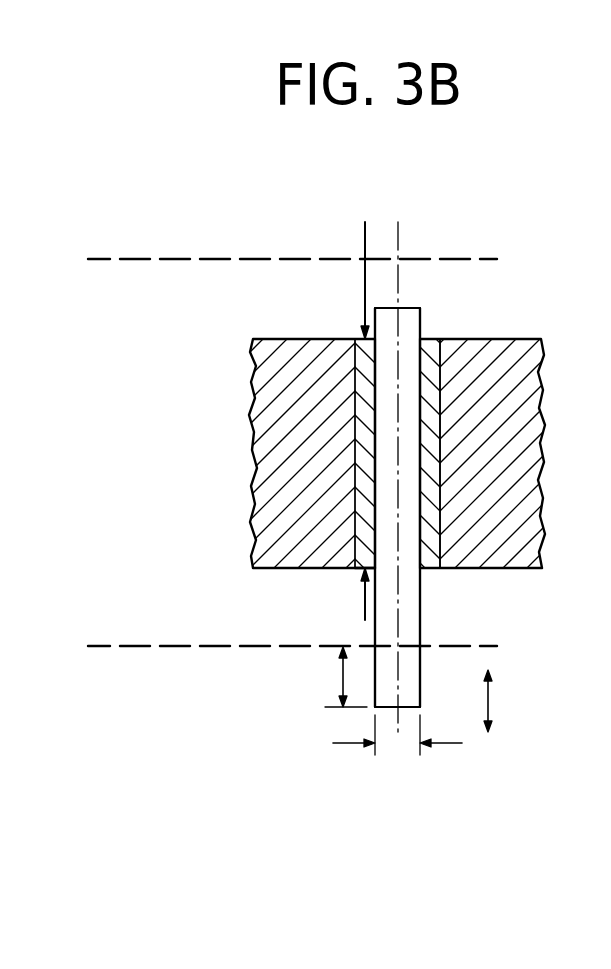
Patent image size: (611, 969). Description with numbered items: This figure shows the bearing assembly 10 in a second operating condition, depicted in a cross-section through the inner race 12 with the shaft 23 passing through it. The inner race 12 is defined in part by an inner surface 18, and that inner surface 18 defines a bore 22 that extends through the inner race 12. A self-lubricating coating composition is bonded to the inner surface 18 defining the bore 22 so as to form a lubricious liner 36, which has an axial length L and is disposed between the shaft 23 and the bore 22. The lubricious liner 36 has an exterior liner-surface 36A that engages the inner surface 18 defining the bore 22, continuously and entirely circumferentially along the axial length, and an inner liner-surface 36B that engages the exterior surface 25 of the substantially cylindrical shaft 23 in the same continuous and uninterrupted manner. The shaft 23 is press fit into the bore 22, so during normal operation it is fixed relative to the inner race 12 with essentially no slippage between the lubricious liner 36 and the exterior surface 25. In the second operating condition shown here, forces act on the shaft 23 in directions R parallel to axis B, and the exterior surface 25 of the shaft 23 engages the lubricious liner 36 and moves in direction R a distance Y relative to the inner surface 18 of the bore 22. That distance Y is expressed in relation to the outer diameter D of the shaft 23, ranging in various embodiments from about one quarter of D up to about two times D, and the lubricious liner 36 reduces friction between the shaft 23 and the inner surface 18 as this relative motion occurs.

The bearing assembly 10 is at (322, 188).
The inner race 12 is at (311, 414).
The inner surface 18 is at (357, 548).
The bore 22 is at (340, 305).
The shaft 23 is at (408, 318).
The exterior surface 25 is at (422, 317).
The lubricious liner 36 is at (365, 358).
The exterior liner-surface 36A is at (416, 492).
The inner liner-surface 36B is at (438, 533).